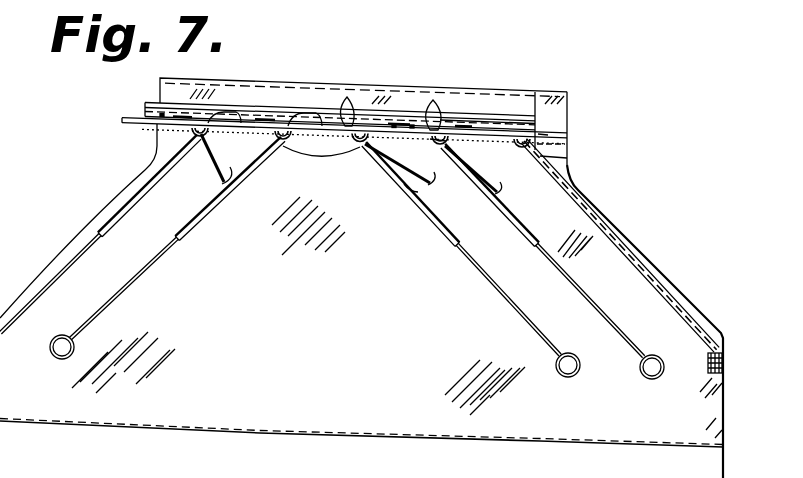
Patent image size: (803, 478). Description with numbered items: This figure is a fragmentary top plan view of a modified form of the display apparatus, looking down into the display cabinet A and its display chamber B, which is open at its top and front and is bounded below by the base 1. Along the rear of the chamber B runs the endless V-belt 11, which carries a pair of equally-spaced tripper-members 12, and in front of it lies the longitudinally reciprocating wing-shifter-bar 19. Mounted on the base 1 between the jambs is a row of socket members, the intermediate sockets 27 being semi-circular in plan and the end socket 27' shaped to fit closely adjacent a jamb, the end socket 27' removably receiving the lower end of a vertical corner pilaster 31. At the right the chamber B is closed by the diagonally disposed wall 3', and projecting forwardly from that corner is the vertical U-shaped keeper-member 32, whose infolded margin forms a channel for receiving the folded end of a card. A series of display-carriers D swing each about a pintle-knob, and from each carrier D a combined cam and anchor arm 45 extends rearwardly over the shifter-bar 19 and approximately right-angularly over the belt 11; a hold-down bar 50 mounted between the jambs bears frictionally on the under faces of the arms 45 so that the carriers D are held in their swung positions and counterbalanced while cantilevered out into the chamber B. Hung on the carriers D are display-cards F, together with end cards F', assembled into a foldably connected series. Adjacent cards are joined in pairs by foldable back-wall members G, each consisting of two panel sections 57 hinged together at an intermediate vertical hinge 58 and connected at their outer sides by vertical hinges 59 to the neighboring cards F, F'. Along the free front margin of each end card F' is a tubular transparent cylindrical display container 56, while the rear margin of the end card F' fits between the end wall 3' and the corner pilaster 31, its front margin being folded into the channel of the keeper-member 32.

The base 1 is at (240, 426).
The front wall 3' is at (645, 321).
The endless V-belt 11 is at (266, 108).
The tripper-members 12 is at (363, 94).
The wing-shifter-bar 19 is at (493, 131).
The intermediate socket member 27 is at (424, 151).
The end socket member 27' is at (569, 135).
The corner pilaster 31 is at (567, 167).
The keeper-member 32 is at (709, 372).
The combined cam and anchor arm 45 is at (337, 105).
The hold-down bar 50 is at (148, 128).
The cylindrical display container 56 is at (51, 355).
The panel sections 57 is at (217, 183).
The intermediate hinge 58 is at (307, 160).
The side hinges 59 is at (273, 145).
The display cabinet A is at (100, 204).
The display chamber B is at (332, 306).
The display-carriers D is at (228, 190).
The display-cards F is at (352, 248).
The end display-cards F' is at (620, 245).
The back-wall members G is at (340, 167).